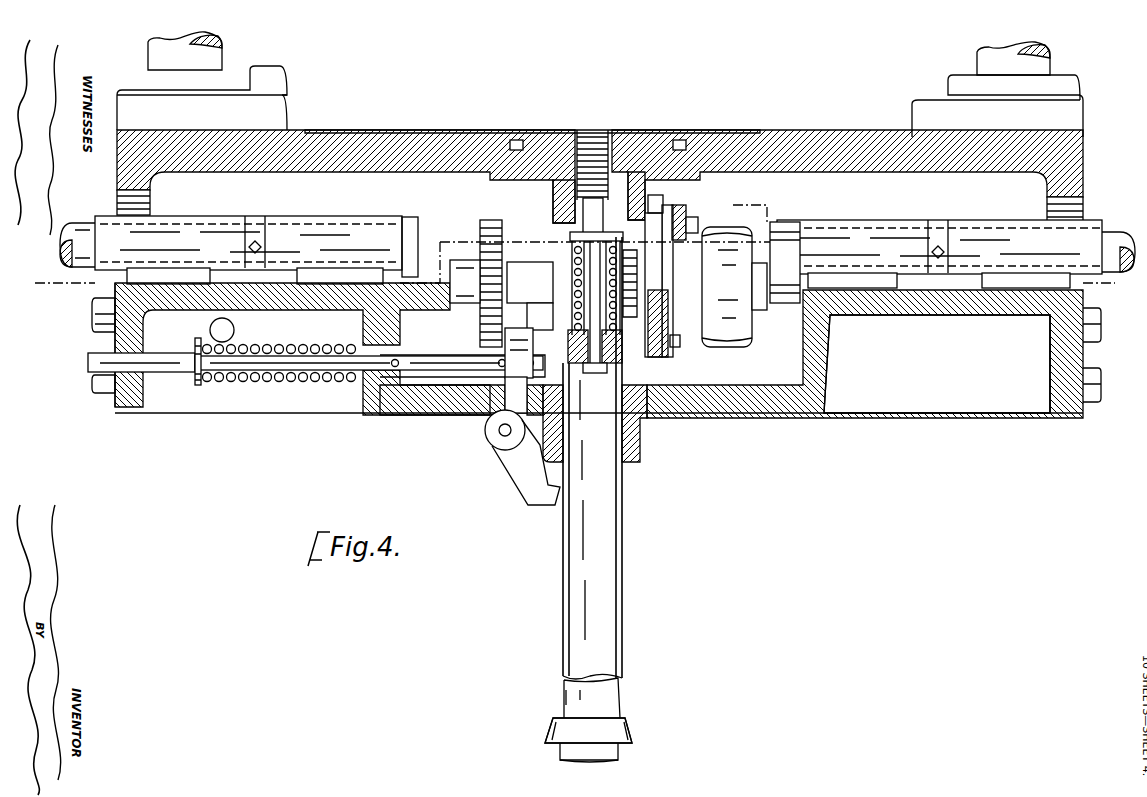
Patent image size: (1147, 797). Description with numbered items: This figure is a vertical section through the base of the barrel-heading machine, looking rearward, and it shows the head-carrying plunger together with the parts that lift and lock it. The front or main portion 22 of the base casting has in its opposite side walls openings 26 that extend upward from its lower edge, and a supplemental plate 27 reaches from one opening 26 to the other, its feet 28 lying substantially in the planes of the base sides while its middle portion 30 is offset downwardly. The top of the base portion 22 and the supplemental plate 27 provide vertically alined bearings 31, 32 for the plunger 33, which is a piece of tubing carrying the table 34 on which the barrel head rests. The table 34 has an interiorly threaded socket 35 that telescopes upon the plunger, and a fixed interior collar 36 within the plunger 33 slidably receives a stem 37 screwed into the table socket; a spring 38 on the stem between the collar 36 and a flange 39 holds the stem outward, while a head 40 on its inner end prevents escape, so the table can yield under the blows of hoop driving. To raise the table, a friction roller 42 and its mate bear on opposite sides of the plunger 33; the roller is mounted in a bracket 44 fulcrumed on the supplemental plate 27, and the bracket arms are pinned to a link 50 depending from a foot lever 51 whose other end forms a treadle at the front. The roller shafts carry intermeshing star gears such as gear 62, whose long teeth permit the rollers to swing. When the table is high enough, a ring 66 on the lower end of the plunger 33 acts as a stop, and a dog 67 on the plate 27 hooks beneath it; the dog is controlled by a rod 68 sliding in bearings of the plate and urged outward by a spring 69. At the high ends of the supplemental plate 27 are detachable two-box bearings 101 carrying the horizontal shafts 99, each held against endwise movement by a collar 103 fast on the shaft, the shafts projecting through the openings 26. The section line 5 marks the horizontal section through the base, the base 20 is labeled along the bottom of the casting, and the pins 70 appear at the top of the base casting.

The section line 5 is at (576, 283).
The casing base 20 is at (596, 362).
The front or main portion of the base 22 is at (600, 144).
The openings 26 is at (117, 200).
The supplemental plate 27 is at (937, 364).
The feet 28 is at (1053, 377).
The middle portion 30 is at (433, 402).
The bearing 31 is at (553, 192).
The bearing 32 is at (641, 438).
The plunger 33 is at (622, 545).
The table 34 is at (683, 134).
The socket 35 is at (574, 130).
The fixed interior collar 36 is at (612, 368).
The stem 37 is at (585, 259).
The spring 38 is at (637, 317).
The flange 39 is at (570, 236).
The head 40 is at (595, 366).
The friction roller 42 is at (645, 265).
The bracket 44 is at (529, 337).
The link 50 is at (663, 272).
The foot lever 51 is at (690, 207).
The star gear 62 is at (490, 222).
The ring 66 is at (549, 724).
The dog 67 is at (523, 471).
The rod 68 is at (172, 365).
The spring 69 is at (305, 382).
The pin 70 is at (222, 53).
The shaft 99 is at (62, 237).
The bearing 101 is at (598, 238).
The collar 103 is at (250, 228).